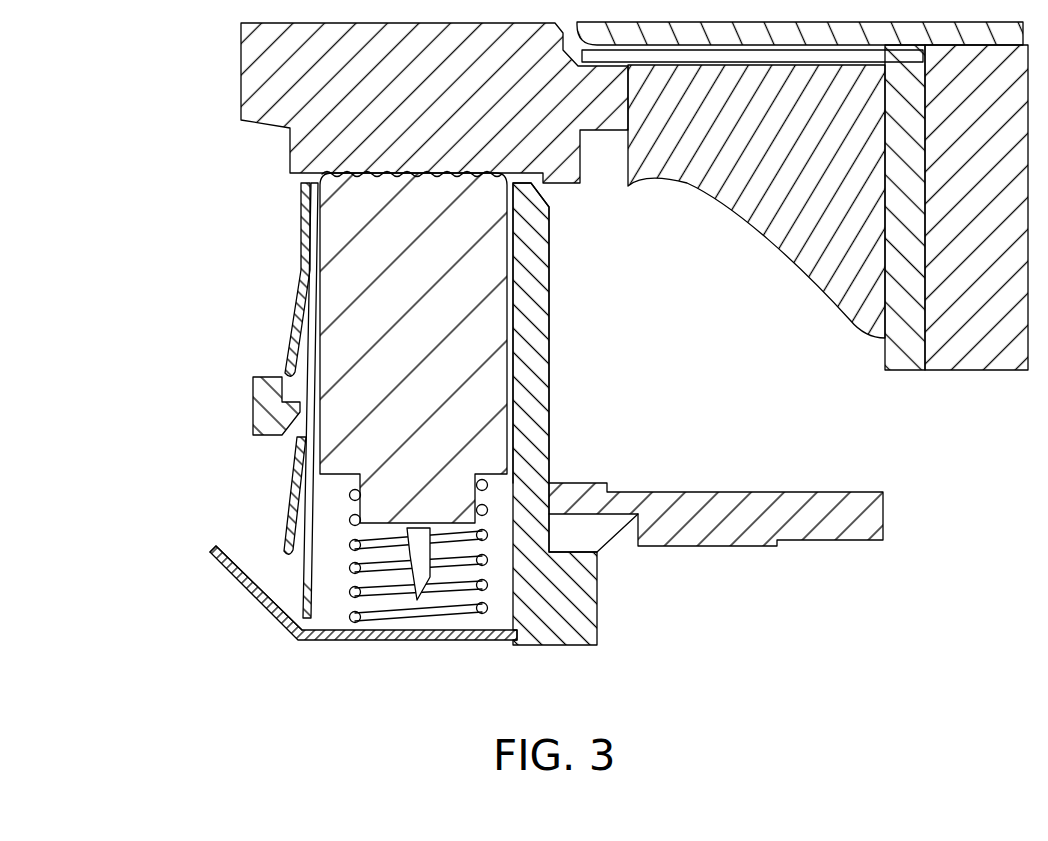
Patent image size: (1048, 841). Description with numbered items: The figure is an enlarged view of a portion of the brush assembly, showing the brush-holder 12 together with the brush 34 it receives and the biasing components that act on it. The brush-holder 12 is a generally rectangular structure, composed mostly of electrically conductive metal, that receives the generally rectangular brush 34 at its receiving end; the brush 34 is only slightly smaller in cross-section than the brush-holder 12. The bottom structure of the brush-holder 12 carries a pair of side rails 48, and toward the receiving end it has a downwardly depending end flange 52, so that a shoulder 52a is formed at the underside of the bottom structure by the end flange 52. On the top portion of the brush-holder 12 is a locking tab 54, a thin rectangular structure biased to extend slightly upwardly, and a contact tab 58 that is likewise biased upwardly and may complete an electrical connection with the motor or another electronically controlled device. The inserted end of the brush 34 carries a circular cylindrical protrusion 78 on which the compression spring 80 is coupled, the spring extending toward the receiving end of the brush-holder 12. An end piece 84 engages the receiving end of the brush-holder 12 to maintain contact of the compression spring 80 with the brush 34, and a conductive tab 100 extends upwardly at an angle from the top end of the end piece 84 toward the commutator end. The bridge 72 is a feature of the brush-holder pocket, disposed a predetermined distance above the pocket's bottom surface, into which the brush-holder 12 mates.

The brush-holder 12 is at (327, 651).
The brush 34 is at (482, 403).
The side rails 48 is at (530, 308).
The end flange 52 is at (580, 618).
The shoulder 52a is at (577, 552).
The locking tab 54 is at (283, 362).
The contact tab 58 is at (293, 477).
The bridge 72 is at (262, 405).
The circular cylindrical protrusion 78 is at (407, 526).
The compression spring 80 is at (477, 610).
The end piece 84 is at (400, 640).
The conductive tab 100 is at (262, 602).